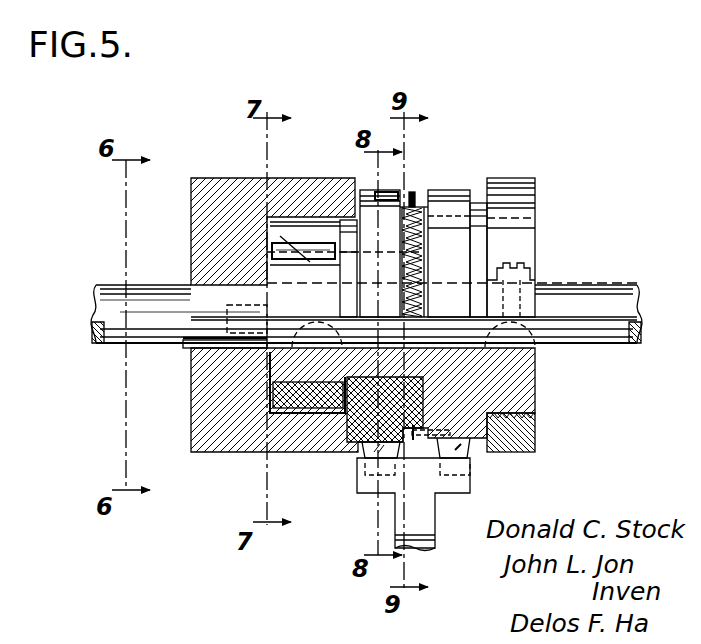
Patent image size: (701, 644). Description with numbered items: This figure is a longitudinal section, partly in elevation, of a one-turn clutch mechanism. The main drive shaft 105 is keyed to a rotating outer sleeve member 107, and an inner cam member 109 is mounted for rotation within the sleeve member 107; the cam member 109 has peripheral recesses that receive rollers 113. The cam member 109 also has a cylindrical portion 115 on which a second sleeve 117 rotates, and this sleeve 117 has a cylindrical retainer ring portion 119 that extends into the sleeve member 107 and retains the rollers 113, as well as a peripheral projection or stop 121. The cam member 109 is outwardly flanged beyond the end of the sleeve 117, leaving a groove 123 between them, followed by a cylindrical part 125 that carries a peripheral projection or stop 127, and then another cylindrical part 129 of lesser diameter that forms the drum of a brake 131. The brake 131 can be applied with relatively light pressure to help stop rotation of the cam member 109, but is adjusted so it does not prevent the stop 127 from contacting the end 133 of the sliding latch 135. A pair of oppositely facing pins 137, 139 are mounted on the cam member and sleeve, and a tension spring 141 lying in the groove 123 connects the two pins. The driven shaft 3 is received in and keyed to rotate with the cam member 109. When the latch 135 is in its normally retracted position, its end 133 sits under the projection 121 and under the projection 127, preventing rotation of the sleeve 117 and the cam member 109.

The driven shaft 3 is at (590, 292).
The main drive shaft 105 is at (94, 298).
The outer sleeve member 107 is at (206, 178).
The inner cam member 109 is at (267, 368).
The rollers 113 is at (300, 258).
The cylindrical portion 115 is at (350, 218).
The second sleeve 117 is at (365, 190).
The cylindrical retainer ring portion 119 is at (300, 228).
The peripheral projection or stop 121 is at (375, 458).
The groove 123 is at (430, 190).
The cylindrical part 125 is at (472, 180).
The peripheral projection or stop 127 is at (468, 447).
The cylindrical part 129 is at (522, 216).
The brake 131 is at (535, 440).
The end of the latch 133 is at (470, 485).
The sliding latch 135 is at (436, 528).
The pin 137 is at (412, 200).
The pin 139 is at (417, 440).
The tension spring 141 is at (421, 288).